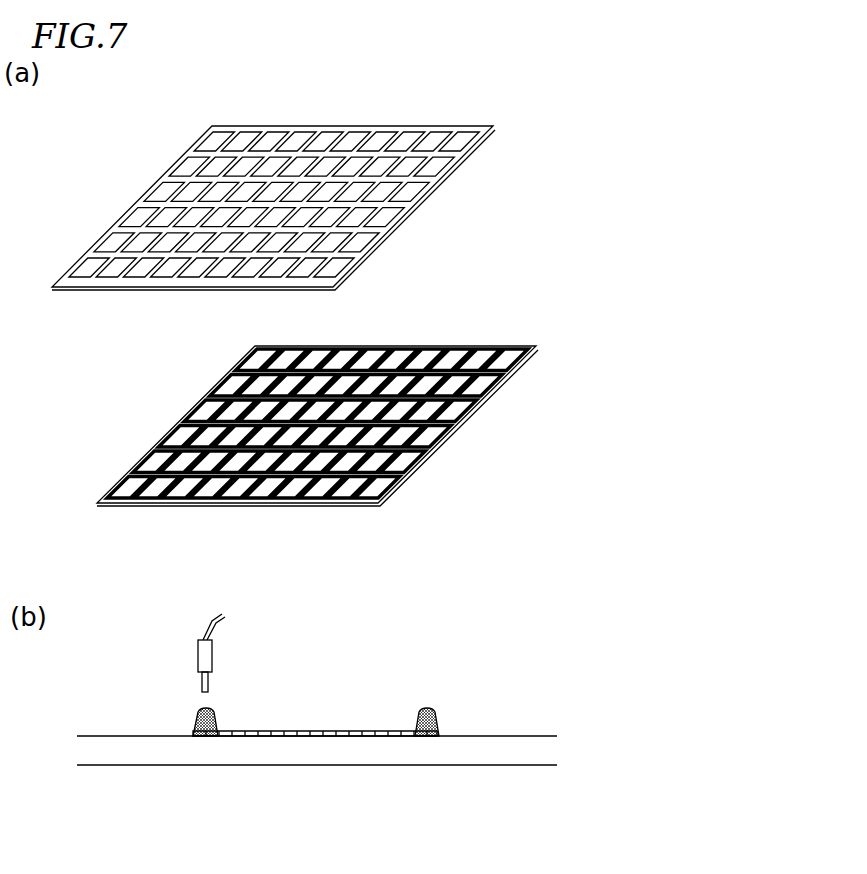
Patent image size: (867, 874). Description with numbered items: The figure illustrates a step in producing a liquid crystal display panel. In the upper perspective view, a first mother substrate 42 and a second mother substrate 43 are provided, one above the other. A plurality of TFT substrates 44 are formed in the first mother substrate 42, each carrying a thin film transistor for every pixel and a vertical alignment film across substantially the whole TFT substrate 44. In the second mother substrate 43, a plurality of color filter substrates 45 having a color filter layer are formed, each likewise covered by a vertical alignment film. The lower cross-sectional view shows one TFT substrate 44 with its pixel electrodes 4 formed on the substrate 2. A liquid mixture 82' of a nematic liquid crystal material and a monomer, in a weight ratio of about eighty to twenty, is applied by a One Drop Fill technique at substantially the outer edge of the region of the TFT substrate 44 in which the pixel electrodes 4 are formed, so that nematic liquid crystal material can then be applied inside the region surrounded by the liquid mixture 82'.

The TFT substrate base 2 is at (548, 752).
The pixel electrodes 4 is at (278, 733).
The first mother substrate 42 is at (536, 346).
The second mother substrate 43 is at (493, 127).
The TFT substrate 44 is at (135, 487).
The color filter substrate 45 is at (118, 243).
The liquid mixture 82' is at (292, 712).